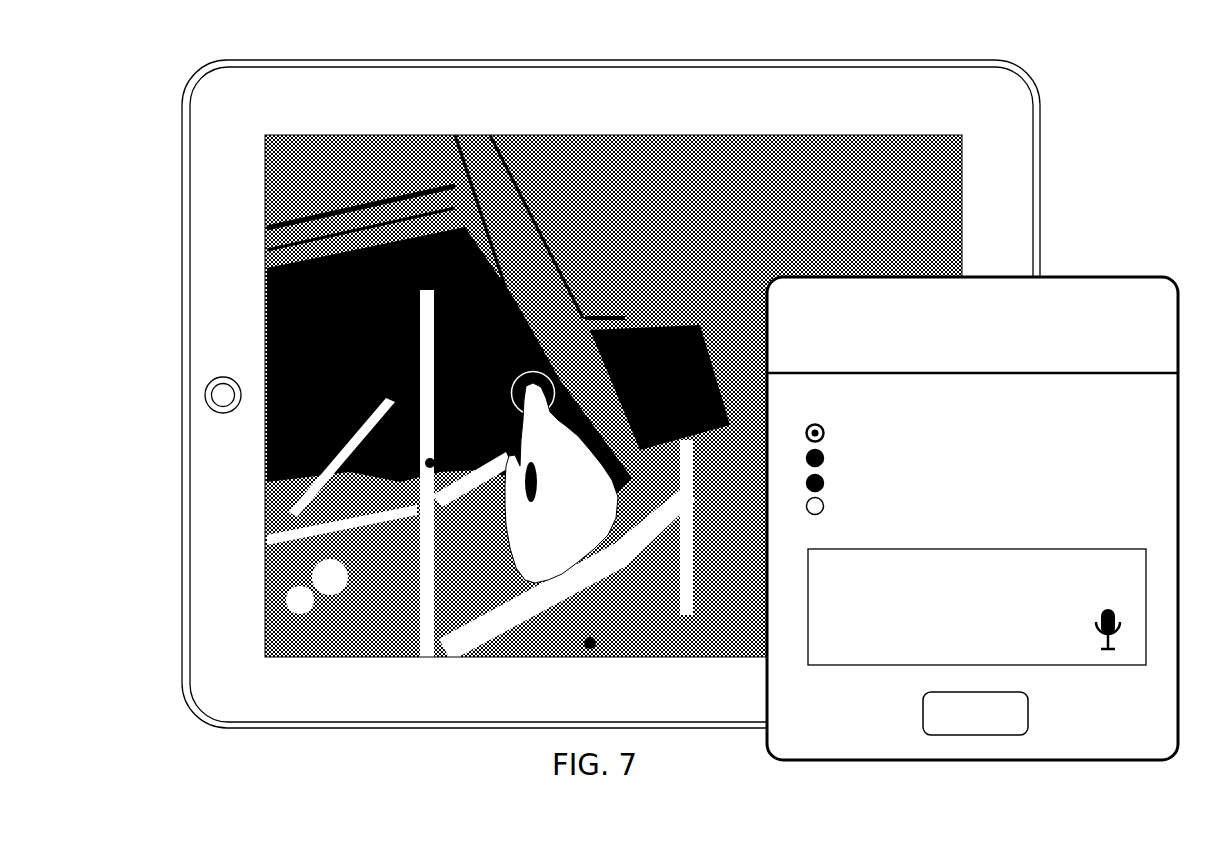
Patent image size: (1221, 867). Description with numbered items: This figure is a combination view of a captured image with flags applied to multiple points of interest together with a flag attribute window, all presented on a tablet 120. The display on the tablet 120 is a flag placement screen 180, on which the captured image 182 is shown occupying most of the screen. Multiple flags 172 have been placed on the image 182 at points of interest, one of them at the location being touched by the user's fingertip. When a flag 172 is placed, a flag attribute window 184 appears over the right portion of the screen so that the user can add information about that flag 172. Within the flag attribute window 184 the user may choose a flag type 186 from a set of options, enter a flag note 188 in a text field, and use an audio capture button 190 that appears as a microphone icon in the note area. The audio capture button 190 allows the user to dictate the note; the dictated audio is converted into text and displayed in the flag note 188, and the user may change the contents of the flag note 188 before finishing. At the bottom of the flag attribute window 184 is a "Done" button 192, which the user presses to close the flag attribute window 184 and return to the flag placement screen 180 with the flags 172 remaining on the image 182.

The flag placement screen 180 is at (164, 88).
The tablet 120 is at (1023, 148).
The image 182 is at (950, 220).
The flag 172 is at (585, 320).
The flag attribute window 184 is at (1097, 277).
The flag type 186 is at (950, 517).
The flag note 188 is at (1142, 570).
The audio capture button 190 is at (1132, 627).
The "Done" button 192 is at (985, 736).